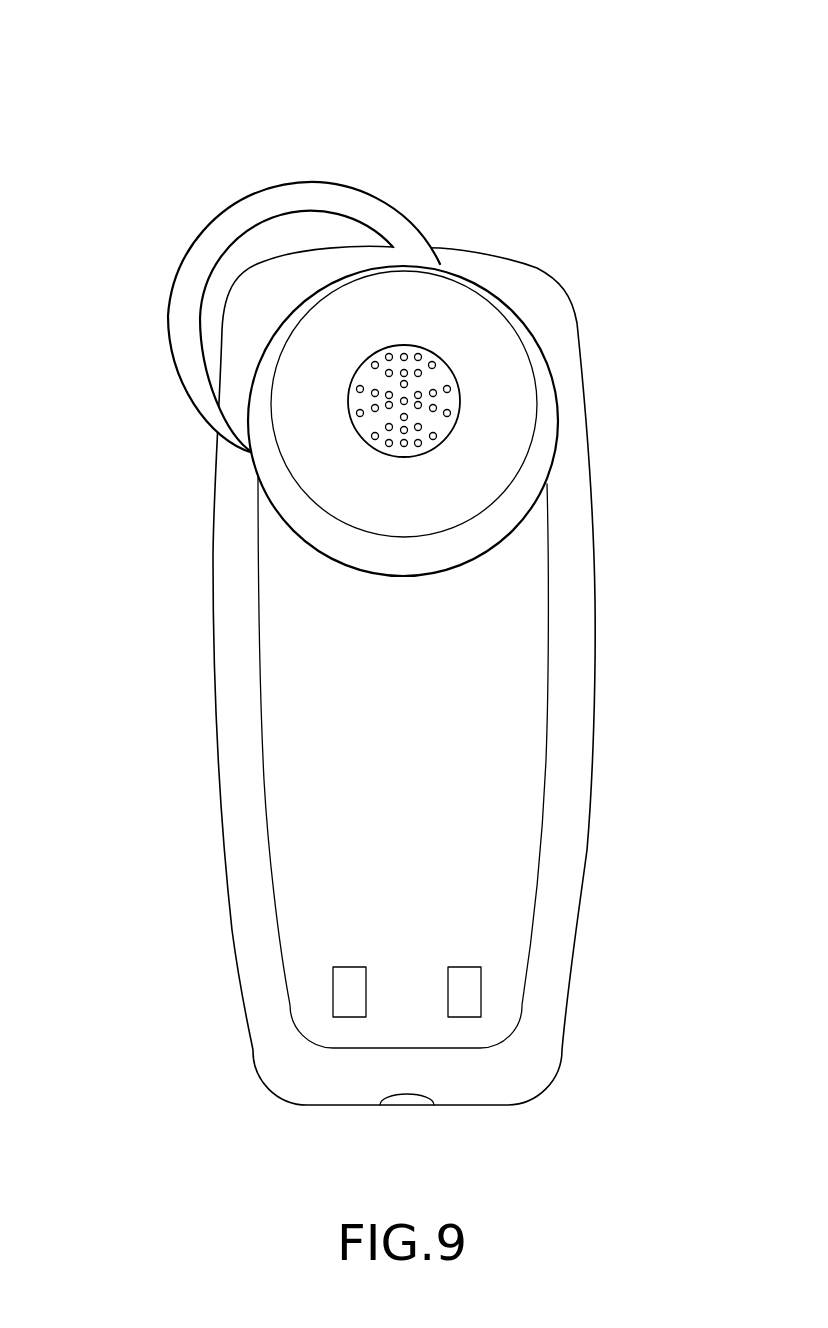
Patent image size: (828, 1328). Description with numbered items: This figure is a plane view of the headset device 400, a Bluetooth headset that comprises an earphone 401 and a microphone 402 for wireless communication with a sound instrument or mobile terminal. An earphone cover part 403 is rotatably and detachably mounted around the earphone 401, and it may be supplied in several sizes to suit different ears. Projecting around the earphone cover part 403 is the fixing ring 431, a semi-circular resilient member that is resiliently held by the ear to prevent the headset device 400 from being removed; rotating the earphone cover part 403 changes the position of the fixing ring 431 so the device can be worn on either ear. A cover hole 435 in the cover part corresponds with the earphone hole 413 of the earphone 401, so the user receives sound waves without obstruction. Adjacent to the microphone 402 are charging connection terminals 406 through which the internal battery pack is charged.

The headset device 400 is at (487, 48).
The earphone 401 is at (524, 317).
The microphone 402 is at (412, 1098).
The earphone cover part 403 is at (497, 406).
The charging connection terminals 406 is at (347, 993).
The earphone hole 413 is at (404, 400).
The fixing ring 431 is at (223, 228).
The cover hole 435 is at (362, 437).